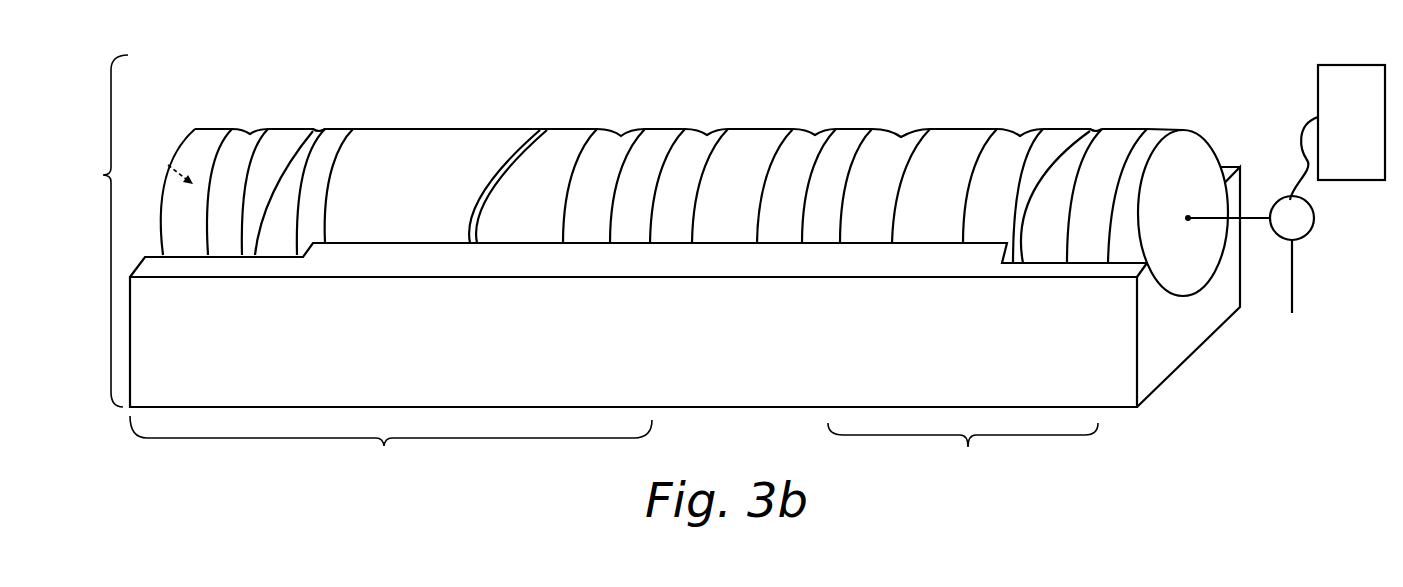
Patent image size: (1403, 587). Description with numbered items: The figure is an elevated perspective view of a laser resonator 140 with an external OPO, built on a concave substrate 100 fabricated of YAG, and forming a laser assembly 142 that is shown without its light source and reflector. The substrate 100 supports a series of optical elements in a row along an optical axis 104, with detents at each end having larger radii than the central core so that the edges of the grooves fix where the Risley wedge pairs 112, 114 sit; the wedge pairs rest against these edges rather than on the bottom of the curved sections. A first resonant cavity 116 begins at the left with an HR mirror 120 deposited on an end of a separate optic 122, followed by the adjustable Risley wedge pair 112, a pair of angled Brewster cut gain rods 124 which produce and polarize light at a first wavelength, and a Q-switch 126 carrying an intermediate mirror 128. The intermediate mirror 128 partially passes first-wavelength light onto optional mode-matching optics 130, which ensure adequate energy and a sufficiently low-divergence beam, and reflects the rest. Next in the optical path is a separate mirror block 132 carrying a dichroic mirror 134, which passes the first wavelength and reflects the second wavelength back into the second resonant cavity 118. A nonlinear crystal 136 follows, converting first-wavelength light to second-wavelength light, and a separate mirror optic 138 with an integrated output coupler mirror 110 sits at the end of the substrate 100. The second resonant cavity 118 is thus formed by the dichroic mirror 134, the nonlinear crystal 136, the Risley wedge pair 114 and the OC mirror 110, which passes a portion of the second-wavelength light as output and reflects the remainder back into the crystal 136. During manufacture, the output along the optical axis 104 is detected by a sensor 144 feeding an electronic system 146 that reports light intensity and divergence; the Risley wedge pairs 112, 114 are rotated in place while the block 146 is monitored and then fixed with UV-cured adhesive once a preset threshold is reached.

The substrate 100 is at (685, 287).
The optical axis 104 is at (1263, 213).
The output coupler mirror 110 is at (1124, 134).
The adjustable Risley wedge pair 112 is at (288, 129).
The adjustable Risley wedge pair 114 is at (1048, 129).
The first resonant cavity 116 is at (391, 444).
The second resonant cavity 118 is at (963, 454).
The HR mirror 120 is at (164, 162).
The separate optic 122 is at (214, 192).
The angled Brewster cut gain rods 124 is at (485, 186).
The Q-switch 126 is at (647, 186).
The intermediate mirror 128 is at (698, 147).
The mode-matching optics 130 is at (764, 186).
The separate mirror block 132 is at (837, 186).
The dichroic mirror 134 is at (884, 151).
The nonlinear crystal 136 is at (967, 186).
The separate mirror optic 138 is at (1167, 212).
The laser resonator 140 is at (103, 175).
The laser assembly 142 is at (1083, 81).
The sensor 144 is at (1306, 243).
The electronic system 146 is at (1337, 132).